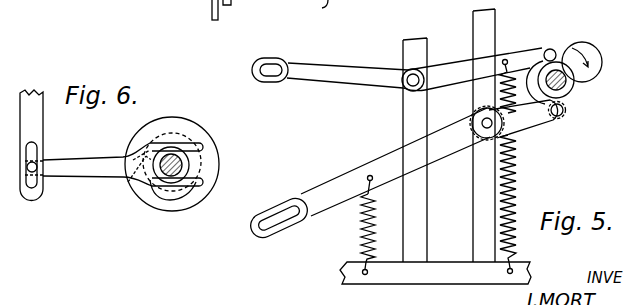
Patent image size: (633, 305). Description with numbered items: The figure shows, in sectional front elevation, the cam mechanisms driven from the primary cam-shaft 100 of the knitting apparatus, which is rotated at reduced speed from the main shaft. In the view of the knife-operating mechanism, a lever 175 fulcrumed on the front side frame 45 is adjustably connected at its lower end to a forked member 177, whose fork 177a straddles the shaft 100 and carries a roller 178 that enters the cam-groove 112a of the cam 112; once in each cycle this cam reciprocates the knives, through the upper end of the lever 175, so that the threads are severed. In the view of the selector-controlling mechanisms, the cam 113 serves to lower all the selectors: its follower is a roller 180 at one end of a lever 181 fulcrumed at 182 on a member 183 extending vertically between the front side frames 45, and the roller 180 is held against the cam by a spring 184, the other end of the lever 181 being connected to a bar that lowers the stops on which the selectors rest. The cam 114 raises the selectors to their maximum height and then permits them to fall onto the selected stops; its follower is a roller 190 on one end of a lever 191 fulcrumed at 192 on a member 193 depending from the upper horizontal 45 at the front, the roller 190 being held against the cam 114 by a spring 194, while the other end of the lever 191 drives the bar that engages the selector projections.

In FIG. 5, the front side frame 45 is at (457, 268).
In FIG. 6, the cam-shaft 100 is at (181, 167).
In FIG. 5, the cam-shaft 100 is at (567, 81).
In FIG. 6, the cam 112 is at (203, 193).
In FIG. 6, the cam-groove 112a is at (181, 195).
In FIG. 5, the cam 113 is at (532, 78).
In FIG. 5, the cam 114 is at (580, 42).
In FIG. 6, the lever 175 is at (35, 128).
In FIG. 6, the forked member 177 is at (88, 168).
In FIG. 6, the fork 177a is at (143, 191).
In FIG. 6, the roller 178 is at (127, 181).
In FIG. 5, the roller 180 is at (547, 49).
In FIG. 5, the lever 181 is at (393, 77).
In FIG. 5, the fulcrum 182 is at (408, 90).
In FIG. 5, the member 183 is at (428, 207).
In FIG. 5, the spring 184 is at (516, 198).
In FIG. 5, the roller 190 is at (566, 110).
In FIG. 5, the lever 191 is at (536, 117).
In FIG. 5, the fulcrum 192 is at (487, 130).
In FIG. 5, the member 193 is at (482, 26).
In FIG. 5, the spring 194 is at (364, 229).